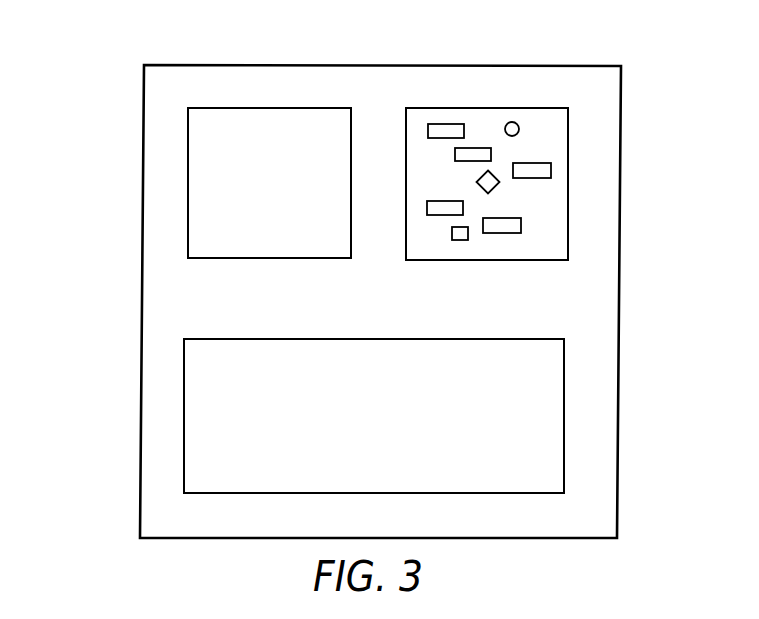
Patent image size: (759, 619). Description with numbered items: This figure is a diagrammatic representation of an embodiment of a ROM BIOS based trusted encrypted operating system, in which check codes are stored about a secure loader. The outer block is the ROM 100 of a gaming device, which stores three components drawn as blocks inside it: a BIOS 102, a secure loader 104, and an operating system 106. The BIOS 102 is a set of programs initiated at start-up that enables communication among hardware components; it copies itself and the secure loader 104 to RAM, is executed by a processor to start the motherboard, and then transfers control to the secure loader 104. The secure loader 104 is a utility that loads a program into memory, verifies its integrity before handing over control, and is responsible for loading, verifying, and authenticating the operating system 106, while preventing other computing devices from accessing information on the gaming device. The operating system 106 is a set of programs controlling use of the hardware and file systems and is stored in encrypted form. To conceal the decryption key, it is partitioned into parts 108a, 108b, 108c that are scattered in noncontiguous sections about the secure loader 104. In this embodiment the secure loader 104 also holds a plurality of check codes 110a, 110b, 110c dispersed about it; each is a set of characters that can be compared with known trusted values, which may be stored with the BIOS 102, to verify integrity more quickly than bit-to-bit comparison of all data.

The ROM 100 is at (143, 133).
The BIOS 102 is at (268, 108).
The secure loader 104 is at (418, 108).
The operating system 106 is at (564, 418).
The decryption key part 108a is at (442, 124).
The decryption key part 108b is at (470, 148).
The decryption key part 108c is at (533, 163).
The check code 110a is at (512, 122).
The check code 110b is at (497, 187).
The check code 110c is at (460, 240).